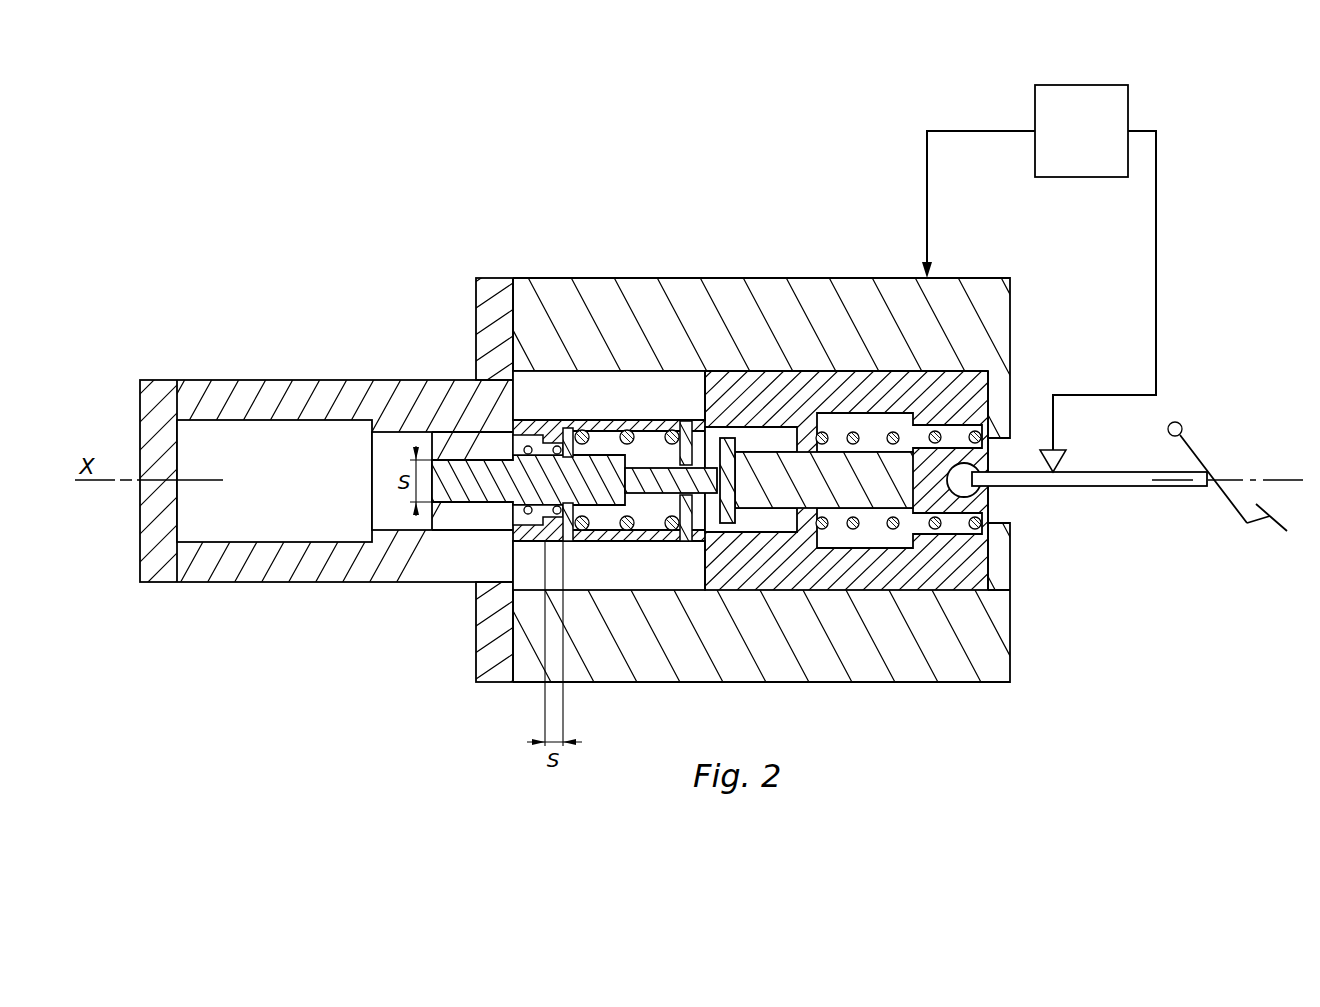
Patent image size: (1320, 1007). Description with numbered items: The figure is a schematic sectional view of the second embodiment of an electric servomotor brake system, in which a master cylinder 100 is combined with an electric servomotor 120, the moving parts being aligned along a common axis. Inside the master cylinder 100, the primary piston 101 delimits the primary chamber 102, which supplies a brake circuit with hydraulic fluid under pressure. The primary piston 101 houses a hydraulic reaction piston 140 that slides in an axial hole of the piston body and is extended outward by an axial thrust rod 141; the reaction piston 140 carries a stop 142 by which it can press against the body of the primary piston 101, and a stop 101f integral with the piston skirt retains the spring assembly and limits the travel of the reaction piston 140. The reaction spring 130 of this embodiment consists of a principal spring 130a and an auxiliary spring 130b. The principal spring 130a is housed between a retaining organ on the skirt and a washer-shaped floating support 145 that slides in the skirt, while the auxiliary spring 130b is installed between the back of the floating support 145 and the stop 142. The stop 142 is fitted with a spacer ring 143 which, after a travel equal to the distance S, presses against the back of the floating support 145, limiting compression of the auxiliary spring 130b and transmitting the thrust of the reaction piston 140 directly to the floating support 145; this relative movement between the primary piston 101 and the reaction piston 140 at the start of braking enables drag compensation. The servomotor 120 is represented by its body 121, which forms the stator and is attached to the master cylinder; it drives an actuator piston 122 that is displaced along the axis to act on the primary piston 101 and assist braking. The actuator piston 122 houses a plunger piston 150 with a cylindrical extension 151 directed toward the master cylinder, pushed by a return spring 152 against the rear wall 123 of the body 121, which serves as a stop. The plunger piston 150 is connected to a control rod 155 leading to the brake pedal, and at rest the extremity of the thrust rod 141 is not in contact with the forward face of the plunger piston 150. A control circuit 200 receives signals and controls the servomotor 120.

The master cylinder 100 is at (265, 398).
The primary piston 101 is at (467, 523).
The stop 101f is at (690, 542).
The primary chamber 102 is at (274, 481).
The electric servomotor 120 is at (806, 278).
The body of the servomotor 121 is at (651, 298).
The actuator piston 122 is at (940, 318).
The rear wall 123 is at (1000, 390).
The reaction spring 130 is at (584, 372).
The principal spring 130a is at (568, 428).
The auxiliary spring 130b is at (525, 438).
The reaction piston 140 is at (590, 478).
The thrust rod 141 is at (655, 500).
The stop 142 is at (512, 517).
The spacer ring 143 is at (533, 522).
The floating support 145 is at (572, 535).
The plunger piston 150 is at (957, 542).
The cylindrical extension 151 is at (890, 483).
The return spring 152 is at (855, 528).
The control rod 155 is at (1108, 480).
The control circuit 200 is at (1039, 278).